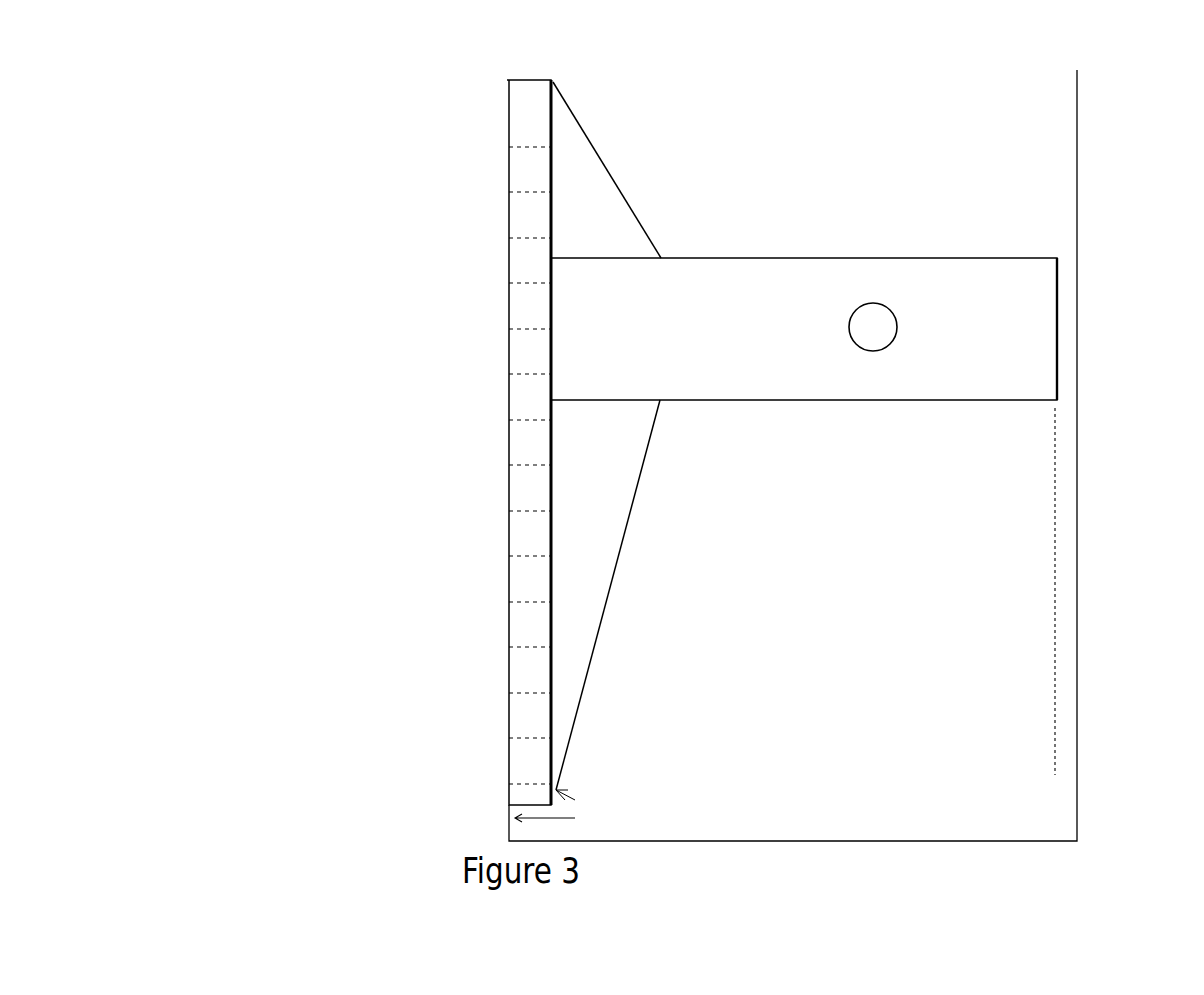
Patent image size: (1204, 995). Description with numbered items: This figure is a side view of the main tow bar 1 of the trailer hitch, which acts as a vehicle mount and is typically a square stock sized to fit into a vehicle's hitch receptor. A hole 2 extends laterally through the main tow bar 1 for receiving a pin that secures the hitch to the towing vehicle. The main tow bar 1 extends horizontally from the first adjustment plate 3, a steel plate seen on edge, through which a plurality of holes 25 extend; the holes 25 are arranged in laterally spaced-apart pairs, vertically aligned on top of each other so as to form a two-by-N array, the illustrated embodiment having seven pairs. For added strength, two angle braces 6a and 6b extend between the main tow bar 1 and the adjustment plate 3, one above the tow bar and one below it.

The main tow bar 1 is at (768, 243).
The hole 2 is at (884, 348).
The first adjustment plate 3 is at (525, 110).
The holes 25 is at (524, 618).
The angle brace 6a is at (597, 128).
The angle brace 6b is at (597, 737).